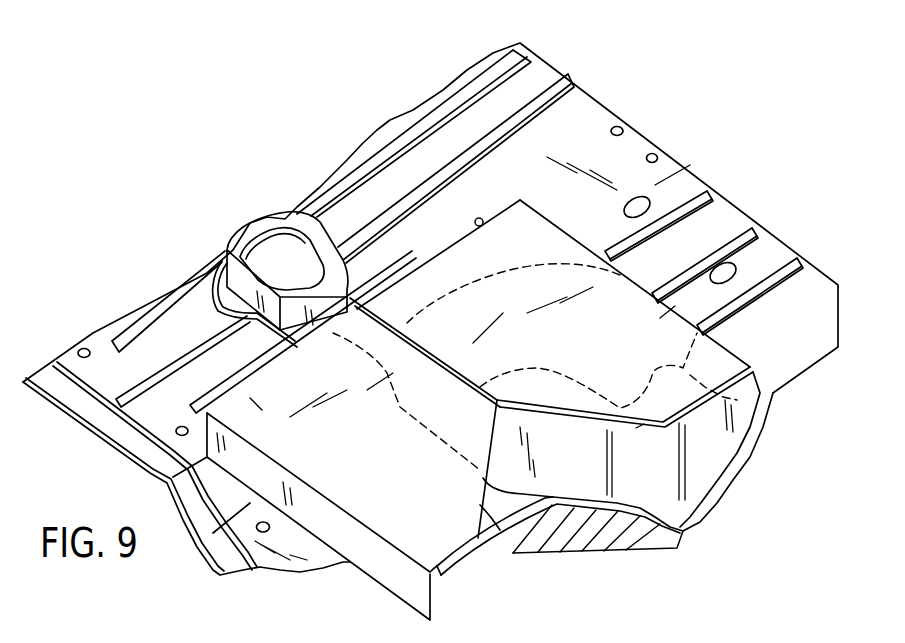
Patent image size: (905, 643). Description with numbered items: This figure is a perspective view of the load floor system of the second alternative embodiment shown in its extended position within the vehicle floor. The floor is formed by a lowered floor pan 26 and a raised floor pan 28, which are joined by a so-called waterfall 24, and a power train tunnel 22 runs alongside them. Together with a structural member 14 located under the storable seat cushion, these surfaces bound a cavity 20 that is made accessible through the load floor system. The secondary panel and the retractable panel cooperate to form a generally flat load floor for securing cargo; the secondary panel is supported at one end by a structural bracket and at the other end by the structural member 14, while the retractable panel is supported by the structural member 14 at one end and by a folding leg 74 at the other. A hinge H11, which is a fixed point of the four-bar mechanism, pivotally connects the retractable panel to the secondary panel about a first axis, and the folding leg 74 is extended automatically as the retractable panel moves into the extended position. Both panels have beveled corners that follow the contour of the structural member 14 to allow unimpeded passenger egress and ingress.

The structural member 14 is at (690, 497).
The cavity 20 is at (765, 415).
The power train tunnel 22 is at (592, 118).
The waterfall 24 is at (673, 310).
The lowered floor pan 26 is at (533, 510).
The raised floor pan 28 is at (670, 190).
The folding leg 74 is at (394, 573).
The hinge H11 is at (393, 313).